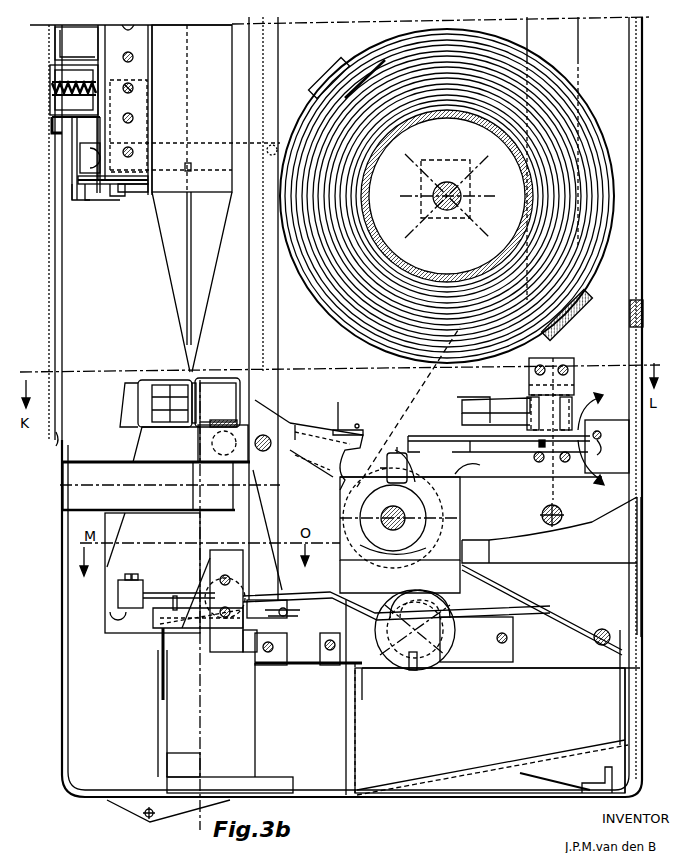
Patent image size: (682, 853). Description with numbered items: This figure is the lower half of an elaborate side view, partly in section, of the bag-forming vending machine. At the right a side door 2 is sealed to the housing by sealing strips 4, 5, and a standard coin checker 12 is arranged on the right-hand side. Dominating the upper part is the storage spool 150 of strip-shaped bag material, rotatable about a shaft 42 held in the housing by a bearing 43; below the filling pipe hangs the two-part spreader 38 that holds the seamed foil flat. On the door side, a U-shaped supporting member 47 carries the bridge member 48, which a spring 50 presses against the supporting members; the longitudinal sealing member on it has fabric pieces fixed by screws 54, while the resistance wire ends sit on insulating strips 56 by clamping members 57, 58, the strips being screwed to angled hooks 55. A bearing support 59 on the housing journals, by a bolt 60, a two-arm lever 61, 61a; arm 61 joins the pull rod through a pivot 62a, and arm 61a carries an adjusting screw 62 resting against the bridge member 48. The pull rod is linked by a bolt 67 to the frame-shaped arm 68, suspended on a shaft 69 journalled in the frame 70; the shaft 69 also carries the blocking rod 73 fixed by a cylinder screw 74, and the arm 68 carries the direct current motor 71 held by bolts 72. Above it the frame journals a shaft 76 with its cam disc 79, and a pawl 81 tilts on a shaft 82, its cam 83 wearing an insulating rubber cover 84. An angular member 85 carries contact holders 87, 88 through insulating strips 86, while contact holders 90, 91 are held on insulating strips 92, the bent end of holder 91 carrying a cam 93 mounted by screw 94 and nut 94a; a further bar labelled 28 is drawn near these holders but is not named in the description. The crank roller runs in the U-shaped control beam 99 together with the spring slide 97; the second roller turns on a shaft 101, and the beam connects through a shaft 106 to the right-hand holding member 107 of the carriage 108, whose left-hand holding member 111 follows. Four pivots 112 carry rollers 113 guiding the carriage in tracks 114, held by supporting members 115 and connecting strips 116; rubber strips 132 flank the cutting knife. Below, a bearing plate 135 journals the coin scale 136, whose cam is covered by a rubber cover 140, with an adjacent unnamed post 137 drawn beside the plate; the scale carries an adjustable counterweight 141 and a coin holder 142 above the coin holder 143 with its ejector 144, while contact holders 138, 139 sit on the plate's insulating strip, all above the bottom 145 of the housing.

The side door 2 is at (644, 52).
The sealing strip 4 is at (647, 310).
The sealing strip 5 is at (56, 440).
The coin checker 12 is at (639, 528).
The bar 28 is at (423, 467).
The two-part spreader 38 is at (189, 228).
The shaft 42 is at (447, 182).
The bearing 43 is at (466, 212).
The supporting member 47 is at (67, 60).
The bridge member 48 is at (85, 72).
The spring 50 is at (50, 87).
The screw 54 is at (128, 28).
The angled hook 55 is at (103, 200).
The insulating strip 56 is at (110, 200).
The clamping member 57 is at (133, 187).
The clamping member 58 is at (147, 182).
The bearing support 59 is at (79, 192).
The bolt 60 is at (92, 155).
The lever arm 61 is at (195, 143).
The lever arm 61a is at (137, 103).
The adjusting screw 62 is at (125, 86).
The pivot 62a is at (270, 143).
The bolt 67 is at (275, 663).
The frame-shaped arm 68 is at (312, 663).
The shaft 69 is at (604, 630).
The frame 70 is at (632, 660).
The direct current motor 71 is at (465, 667).
The bolt 72 is at (280, 647).
The blocking rod 73 is at (567, 667).
The cylinder screw 74 is at (607, 663).
The shaft 76 is at (407, 520).
The cam disc 79 is at (430, 537).
The pawl 81 is at (407, 430).
The shaft 82 is at (600, 440).
The cam 83 is at (472, 436).
The insulating rubber cover 84 is at (455, 424).
The angular member 85 is at (570, 395).
The insulating strip 86 is at (530, 400).
The contact holder 87 is at (472, 403).
The contact holder 88 is at (490, 395).
The contact holder 90 is at (482, 440).
The contact holder 91 is at (480, 452).
The insulating strip 92 is at (512, 450).
The cam 93 is at (417, 481).
The screw 94 is at (394, 455).
The nut 94a is at (458, 474).
The spring slide 97 is at (348, 411).
The U-shaped control beam 99 is at (295, 425).
The shaft 101 is at (560, 512).
The shaft 106 is at (273, 441).
The right-hand holding member 107 is at (262, 385).
The carriage 108 is at (112, 570).
The left-hand holding member 111 is at (110, 423).
The pivot 112 is at (213, 447).
The roller 113 is at (232, 424).
The track 114 is at (213, 531).
The supporting member 115 is at (80, 462).
The connecting strip 116 is at (280, 780).
The rubber strip 132 is at (212, 385).
The bearing plate 135 is at (172, 632).
The coin scale 136 is at (310, 592).
The post 137 is at (148, 633).
The contact holder 138 is at (280, 640).
The contact holder 139 is at (289, 608).
The rubber cover 140 is at (275, 600).
The adjustable counterweight 141 is at (143, 585).
The coin holder 142 is at (410, 595).
The coin holder 143 is at (363, 737).
The ejector 144 is at (413, 670).
The bottom 145 is at (475, 797).
The storage spool 150 is at (546, 70).